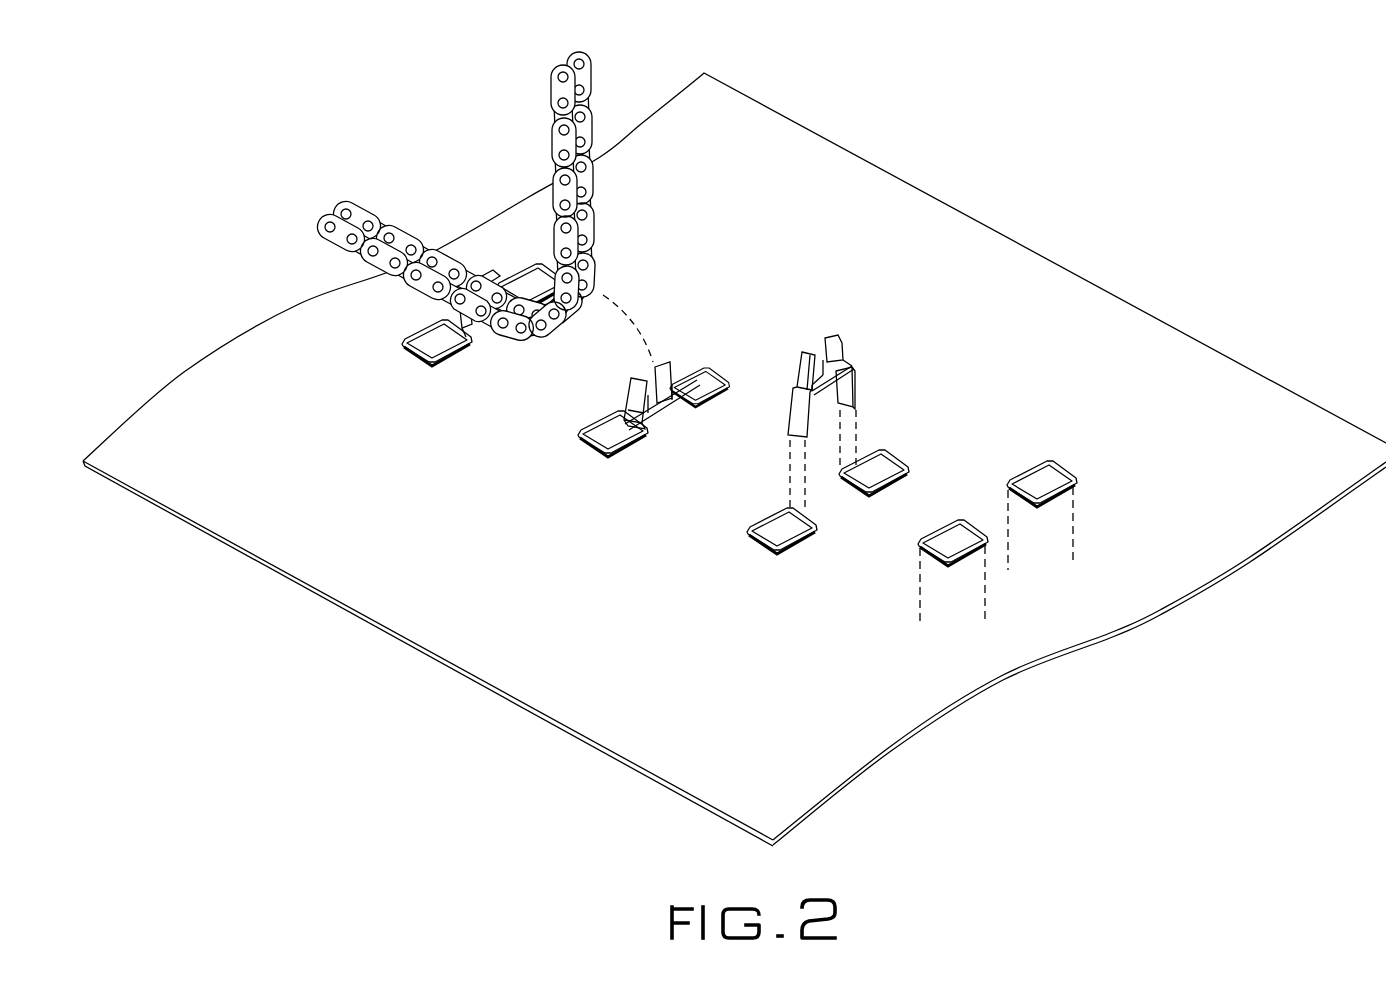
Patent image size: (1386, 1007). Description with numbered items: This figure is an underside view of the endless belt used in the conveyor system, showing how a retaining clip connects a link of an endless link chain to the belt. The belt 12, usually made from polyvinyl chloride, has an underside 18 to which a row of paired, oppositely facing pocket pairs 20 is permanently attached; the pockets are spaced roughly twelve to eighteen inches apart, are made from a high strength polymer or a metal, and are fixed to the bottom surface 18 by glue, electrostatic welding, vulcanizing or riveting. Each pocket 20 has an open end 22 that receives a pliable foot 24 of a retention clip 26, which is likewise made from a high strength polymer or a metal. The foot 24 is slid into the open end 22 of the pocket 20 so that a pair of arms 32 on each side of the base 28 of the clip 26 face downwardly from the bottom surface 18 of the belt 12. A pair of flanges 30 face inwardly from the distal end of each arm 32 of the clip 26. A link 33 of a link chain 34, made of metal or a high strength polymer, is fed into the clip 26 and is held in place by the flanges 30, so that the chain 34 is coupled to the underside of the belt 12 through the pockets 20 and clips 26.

The belt 12 is at (481, 578).
The underside of belt 18 is at (1137, 353).
The pocket pairs 20 is at (571, 448).
The open end 22 is at (606, 414).
The pliable foot 24 is at (643, 437).
The retention clip 26 is at (852, 358).
The base 28 is at (660, 413).
The flanges 30 is at (650, 375).
The arms 32 is at (628, 402).
The link 33 is at (483, 347).
The link chain 34 is at (604, 233).